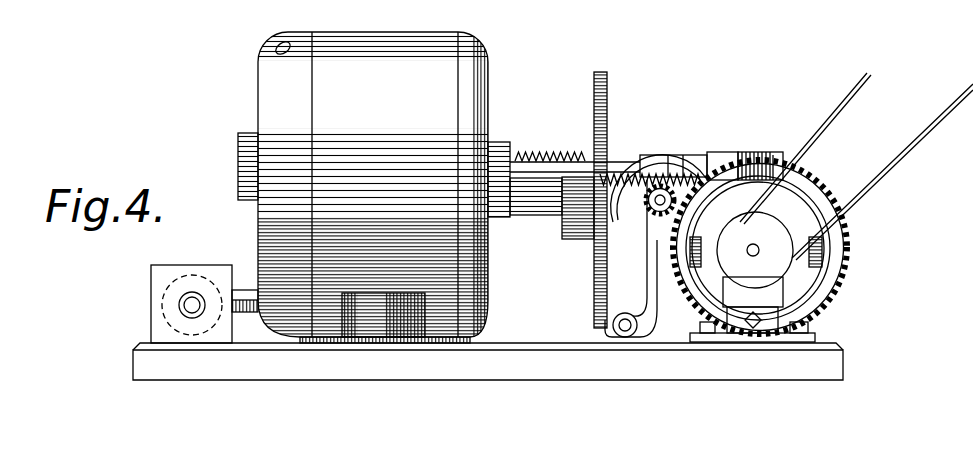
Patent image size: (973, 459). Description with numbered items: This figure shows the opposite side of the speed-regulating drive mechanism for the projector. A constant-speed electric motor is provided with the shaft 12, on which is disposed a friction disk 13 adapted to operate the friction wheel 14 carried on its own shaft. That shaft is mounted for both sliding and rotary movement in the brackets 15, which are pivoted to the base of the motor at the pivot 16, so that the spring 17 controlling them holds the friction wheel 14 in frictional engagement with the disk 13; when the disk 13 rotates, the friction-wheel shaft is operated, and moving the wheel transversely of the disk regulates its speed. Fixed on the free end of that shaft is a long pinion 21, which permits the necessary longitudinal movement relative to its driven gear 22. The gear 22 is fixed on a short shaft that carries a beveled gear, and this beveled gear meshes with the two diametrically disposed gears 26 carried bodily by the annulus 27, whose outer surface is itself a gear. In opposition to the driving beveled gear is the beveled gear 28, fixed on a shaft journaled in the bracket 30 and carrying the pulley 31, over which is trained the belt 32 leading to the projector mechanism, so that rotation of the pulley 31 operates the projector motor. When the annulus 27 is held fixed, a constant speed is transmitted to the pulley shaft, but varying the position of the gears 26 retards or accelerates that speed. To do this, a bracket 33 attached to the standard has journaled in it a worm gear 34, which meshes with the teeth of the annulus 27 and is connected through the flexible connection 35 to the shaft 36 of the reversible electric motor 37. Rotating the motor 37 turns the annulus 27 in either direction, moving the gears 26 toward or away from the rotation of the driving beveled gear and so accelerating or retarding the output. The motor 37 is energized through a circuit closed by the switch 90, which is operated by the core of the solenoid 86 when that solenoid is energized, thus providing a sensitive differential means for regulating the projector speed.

The reversible electric motor 37 is at (490, 57).
The solenoid 86 is at (150, 306).
The switch 90 is at (250, 290).
The shaft 12 is at (528, 213).
The friction disk 13 is at (608, 80).
The shaft 36 is at (531, 151).
The spring 17 is at (549, 157).
The flexible connection 35 is at (650, 160).
The friction wheel 14 is at (661, 143).
The long pinion 21 is at (650, 218).
The pivot 16 is at (613, 328).
The brackets 15 is at (688, 166).
The bracket 33 is at (723, 153).
The worm gear 34 is at (756, 152).
The pulley 31 is at (790, 160).
The belt 32 is at (921, 133).
The driven gear 22 is at (831, 197).
The annulus 27 is at (812, 292).
The beveled gear 28 is at (772, 222).
The gears 26 is at (703, 266).
The bracket 30 is at (770, 296).